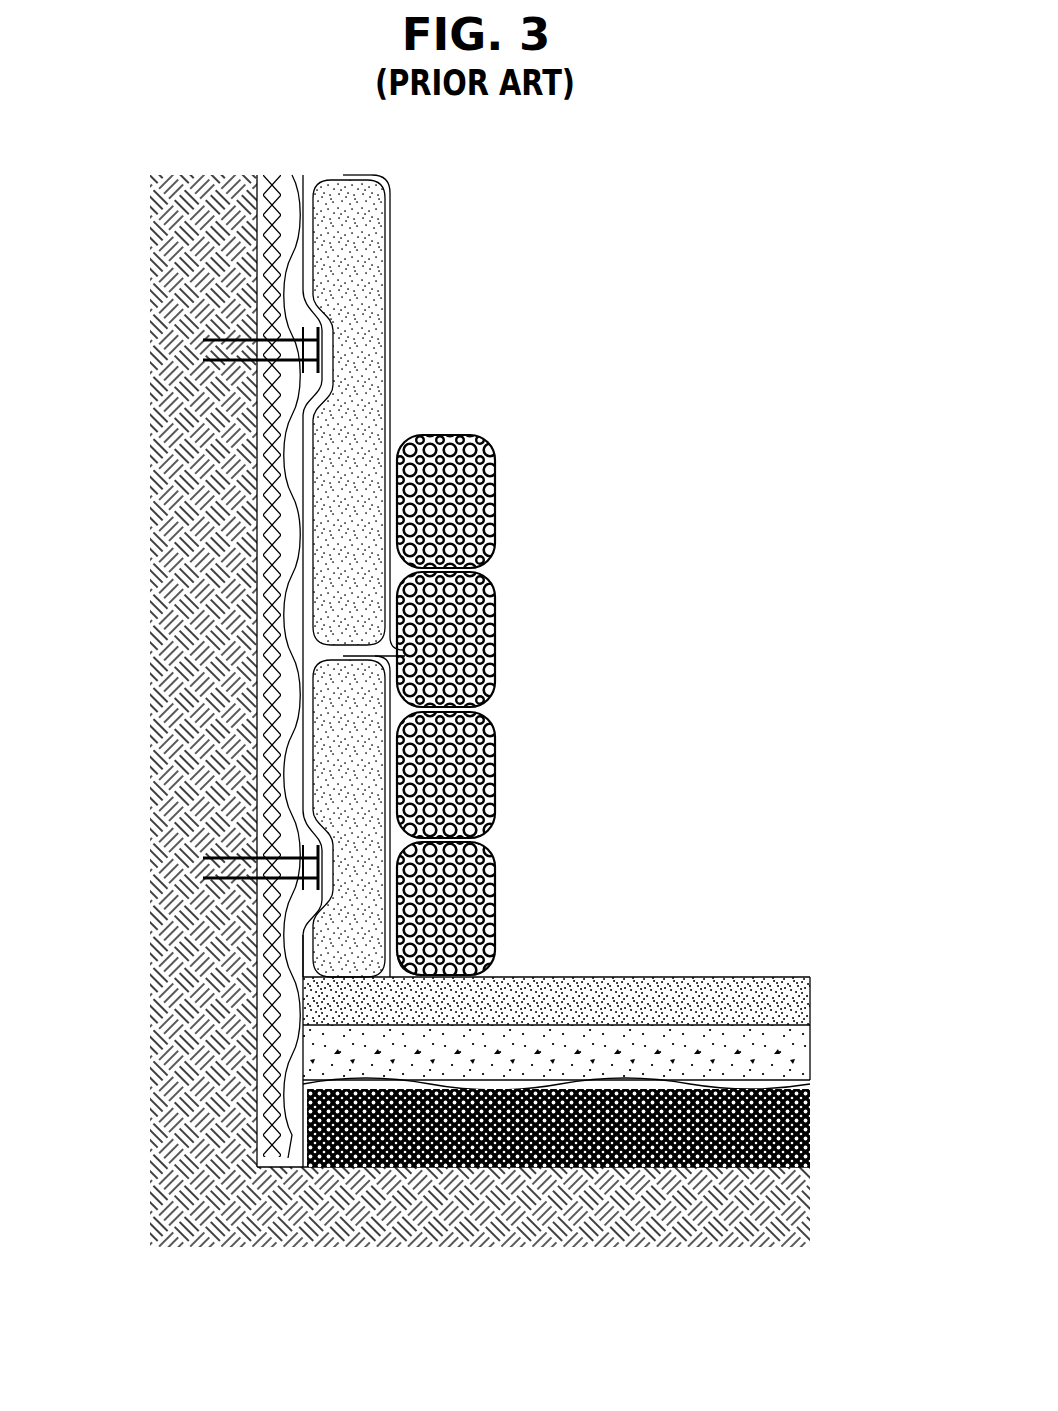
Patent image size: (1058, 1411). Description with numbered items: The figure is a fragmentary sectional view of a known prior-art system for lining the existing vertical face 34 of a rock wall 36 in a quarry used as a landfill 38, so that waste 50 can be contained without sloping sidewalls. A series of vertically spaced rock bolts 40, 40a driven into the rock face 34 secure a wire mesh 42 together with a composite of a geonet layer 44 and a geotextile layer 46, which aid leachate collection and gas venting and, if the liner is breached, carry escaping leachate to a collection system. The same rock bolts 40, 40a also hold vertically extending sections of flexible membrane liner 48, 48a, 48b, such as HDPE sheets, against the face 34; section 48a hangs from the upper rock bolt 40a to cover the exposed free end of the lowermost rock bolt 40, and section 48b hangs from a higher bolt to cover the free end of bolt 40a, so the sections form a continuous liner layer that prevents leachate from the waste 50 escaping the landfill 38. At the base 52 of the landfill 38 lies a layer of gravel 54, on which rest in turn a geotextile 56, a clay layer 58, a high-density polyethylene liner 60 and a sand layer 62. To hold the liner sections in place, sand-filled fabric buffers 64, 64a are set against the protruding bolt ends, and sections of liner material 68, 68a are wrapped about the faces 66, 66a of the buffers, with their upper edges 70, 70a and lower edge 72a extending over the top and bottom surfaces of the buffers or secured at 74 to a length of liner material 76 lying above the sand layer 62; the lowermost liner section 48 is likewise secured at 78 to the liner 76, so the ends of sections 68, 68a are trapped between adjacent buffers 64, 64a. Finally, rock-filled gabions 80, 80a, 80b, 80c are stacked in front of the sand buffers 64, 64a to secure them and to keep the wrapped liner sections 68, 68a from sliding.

The vertical rock face 34 is at (268, 527).
The rock wall 36 is at (48, 637).
The landfill 38 is at (569, 560).
The lowermost rock bolt 40 is at (300, 895).
The upper rock bolt 40a is at (205, 349).
The wire mesh 42 is at (260, 1062).
The geonet layer 44 is at (270, 448).
The geotextile layer 46 is at (276, 397).
The lowermost liner section 48 is at (275, 840).
The liner section 48a is at (296, 690).
The liner section 48b is at (296, 260).
The waste 50 is at (600, 705).
The base of the landfill 52 is at (610, 1028).
The layer of gravel 54 is at (283, 1163).
The geotextile 56 is at (810, 1112).
The clay layer 58 is at (708, 1035).
The high-density polyethylene liner 60 is at (662, 1030).
The sand layer 62 is at (628, 985).
The sand buffer 64 is at (382, 847).
The sand buffer 64a is at (368, 215).
The face of sand buffer 66 is at (386, 765).
The face of sand buffer 66a is at (386, 358).
The liner material section 68 is at (393, 727).
The liner material section 68a is at (390, 277).
The upper edge of liner section 70 is at (496, 679).
The upper edge of liner section 70a is at (350, 177).
The lower edge of liner section 72a is at (403, 650).
The securement point 74 is at (410, 966).
The length of liner material 76 is at (738, 977).
The securement point 78 is at (300, 965).
The rock-filled gabion 80 is at (496, 905).
The rock-filled gabion 80a is at (496, 795).
The rock-filled gabion 80b is at (496, 613).
The rock-filled gabion 80c is at (496, 493).